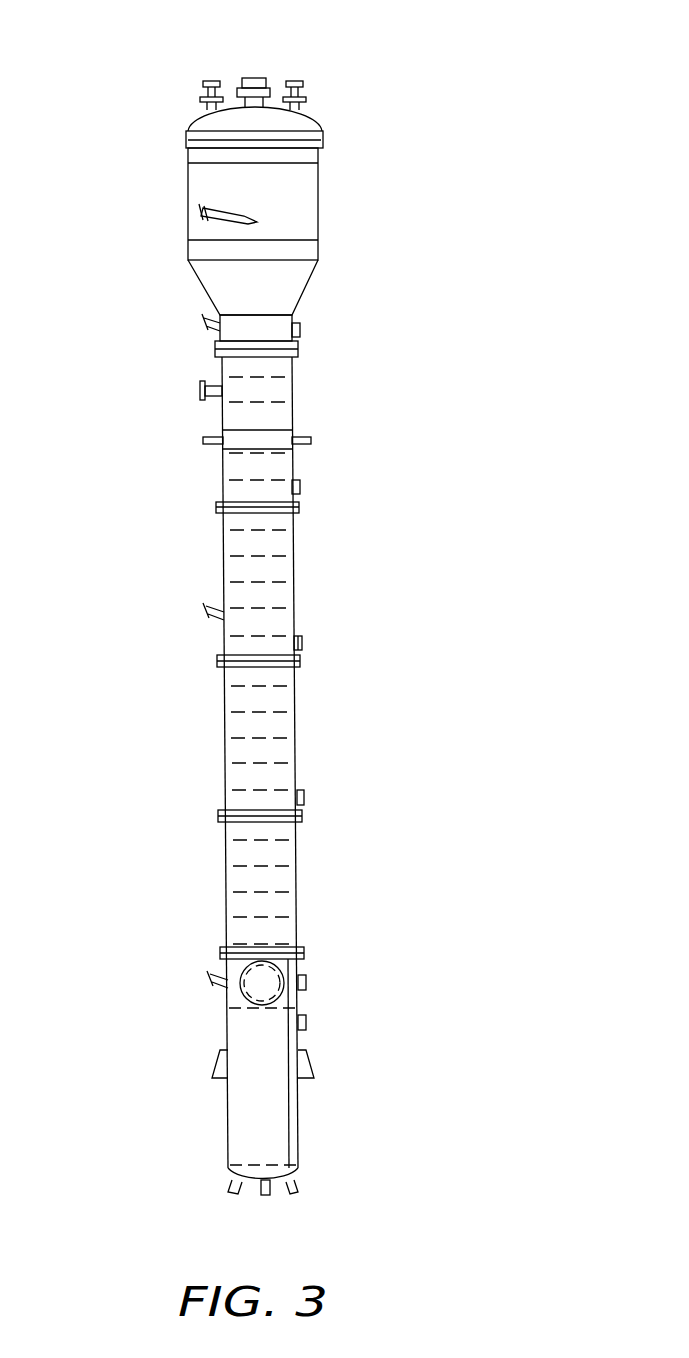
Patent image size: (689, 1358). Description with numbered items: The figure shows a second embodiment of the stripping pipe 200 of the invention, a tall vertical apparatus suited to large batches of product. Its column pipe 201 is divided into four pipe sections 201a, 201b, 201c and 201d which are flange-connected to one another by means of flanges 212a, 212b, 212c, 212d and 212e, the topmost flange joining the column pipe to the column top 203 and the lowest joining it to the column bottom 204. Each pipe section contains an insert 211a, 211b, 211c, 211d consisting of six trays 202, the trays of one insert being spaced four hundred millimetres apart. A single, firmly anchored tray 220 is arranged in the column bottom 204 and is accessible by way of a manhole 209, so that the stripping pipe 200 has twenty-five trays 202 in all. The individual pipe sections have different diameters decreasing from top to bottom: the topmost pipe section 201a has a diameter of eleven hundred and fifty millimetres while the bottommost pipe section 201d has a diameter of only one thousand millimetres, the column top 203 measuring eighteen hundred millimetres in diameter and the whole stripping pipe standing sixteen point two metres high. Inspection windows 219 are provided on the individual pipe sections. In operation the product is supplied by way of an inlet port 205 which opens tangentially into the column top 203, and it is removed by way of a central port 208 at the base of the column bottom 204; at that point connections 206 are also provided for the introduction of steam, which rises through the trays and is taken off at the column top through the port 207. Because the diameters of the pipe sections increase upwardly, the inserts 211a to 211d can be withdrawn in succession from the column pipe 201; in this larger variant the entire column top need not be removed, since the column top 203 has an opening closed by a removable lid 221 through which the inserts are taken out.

The stripping pipe 200 is at (433, 157).
The column pipe 201 is at (458, 515).
The topmost pipe section 201a is at (222, 416).
The pipe section 201b is at (222, 572).
The pipe section 201c is at (226, 750).
The bottommost pipe section 201d is at (226, 877).
The tray 202 is at (250, 688).
The column top 203 is at (135, 172).
The column bottom 204 is at (190, 1107).
The inlet port 205 is at (236, 224).
The connections for the introduction of steam 206 is at (232, 1192).
The port 207 is at (252, 78).
The central port 208 is at (265, 1197).
The manhole 209 is at (243, 976).
The insert 211a is at (280, 412).
The insert 211b is at (282, 570).
The insert 211c is at (283, 723).
The insert 211d is at (285, 878).
The flange 212a is at (298, 346).
The flange 212b is at (298, 504).
The flange 212c is at (300, 660).
The flange 212d is at (300, 814).
The flange 212e is at (304, 952).
The inspection window 219 is at (303, 643).
The firmly anchored tray 220 is at (248, 1010).
The removable lid 221 is at (288, 120).